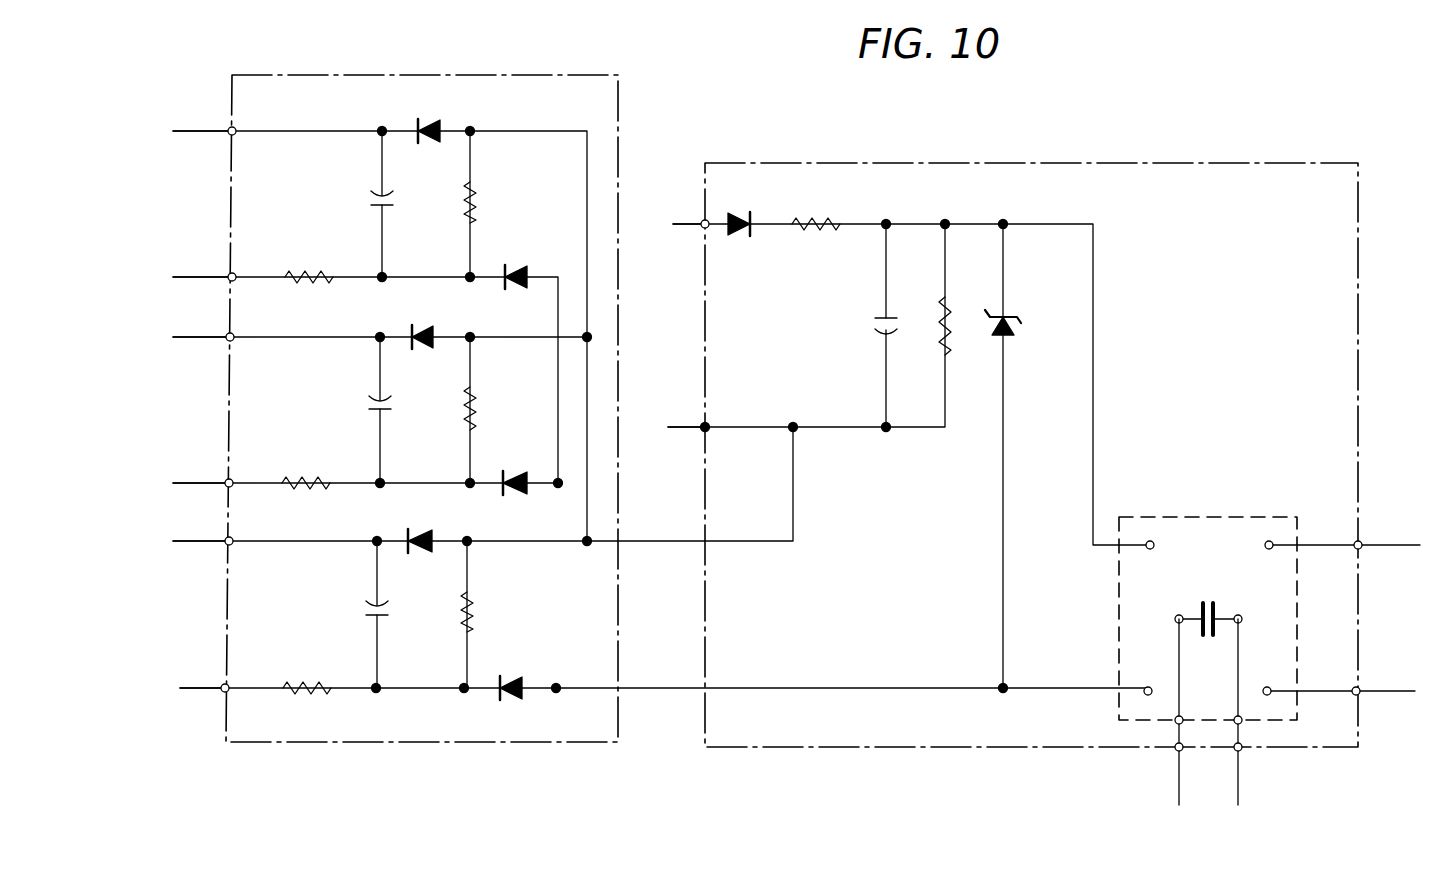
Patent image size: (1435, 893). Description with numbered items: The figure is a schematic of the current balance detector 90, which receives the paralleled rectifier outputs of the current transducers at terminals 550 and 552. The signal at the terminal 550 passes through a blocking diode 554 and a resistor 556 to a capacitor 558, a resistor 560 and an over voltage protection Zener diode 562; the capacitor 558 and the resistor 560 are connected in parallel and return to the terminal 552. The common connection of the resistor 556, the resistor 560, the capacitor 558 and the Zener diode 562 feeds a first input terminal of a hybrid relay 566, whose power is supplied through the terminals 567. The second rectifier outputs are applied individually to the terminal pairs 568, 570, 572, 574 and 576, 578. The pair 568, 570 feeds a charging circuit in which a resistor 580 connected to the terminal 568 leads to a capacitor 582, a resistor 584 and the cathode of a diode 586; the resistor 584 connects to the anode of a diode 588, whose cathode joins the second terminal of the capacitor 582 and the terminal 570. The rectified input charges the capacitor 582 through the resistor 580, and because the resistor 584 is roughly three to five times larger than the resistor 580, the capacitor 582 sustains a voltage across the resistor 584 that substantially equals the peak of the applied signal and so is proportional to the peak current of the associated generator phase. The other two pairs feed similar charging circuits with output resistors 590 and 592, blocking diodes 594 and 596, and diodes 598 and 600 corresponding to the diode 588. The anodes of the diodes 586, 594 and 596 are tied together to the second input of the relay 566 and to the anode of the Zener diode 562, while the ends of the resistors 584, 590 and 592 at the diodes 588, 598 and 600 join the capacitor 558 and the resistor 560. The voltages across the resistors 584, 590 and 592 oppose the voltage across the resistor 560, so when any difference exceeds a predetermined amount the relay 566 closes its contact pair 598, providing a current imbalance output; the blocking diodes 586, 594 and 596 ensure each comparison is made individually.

The current balance detector 90 is at (1031, 434).
The terminal 550 is at (706, 220).
The terminal 552 is at (706, 425).
The blocking diode 554 is at (739, 213).
The resistor 556 is at (813, 216).
The capacitor 558 is at (876, 327).
The resistor 560 is at (946, 302).
The over voltage protection Zener diode 562 is at (1008, 327).
The hybrid relay 566 is at (1284, 517).
The terminals 567 is at (1358, 545).
The terminal 568 is at (230, 275).
The terminal 570 is at (232, 127).
The terminal 572 is at (228, 480).
The terminal 574 is at (228, 340).
The terminal 576 is at (223, 682).
The terminal 578 is at (224, 543).
The resistor 580 is at (305, 281).
The capacitor 582 is at (372, 205).
The resistor 584 is at (480, 203).
The diode 586 is at (516, 268).
The diode 588 is at (435, 120).
The resistor 590 is at (478, 405).
The resistor 592 is at (473, 615).
The diode 594 is at (514, 474).
The diode 596 is at (512, 676).
The diode 598 is at (428, 344).
The diode 600 is at (427, 549).